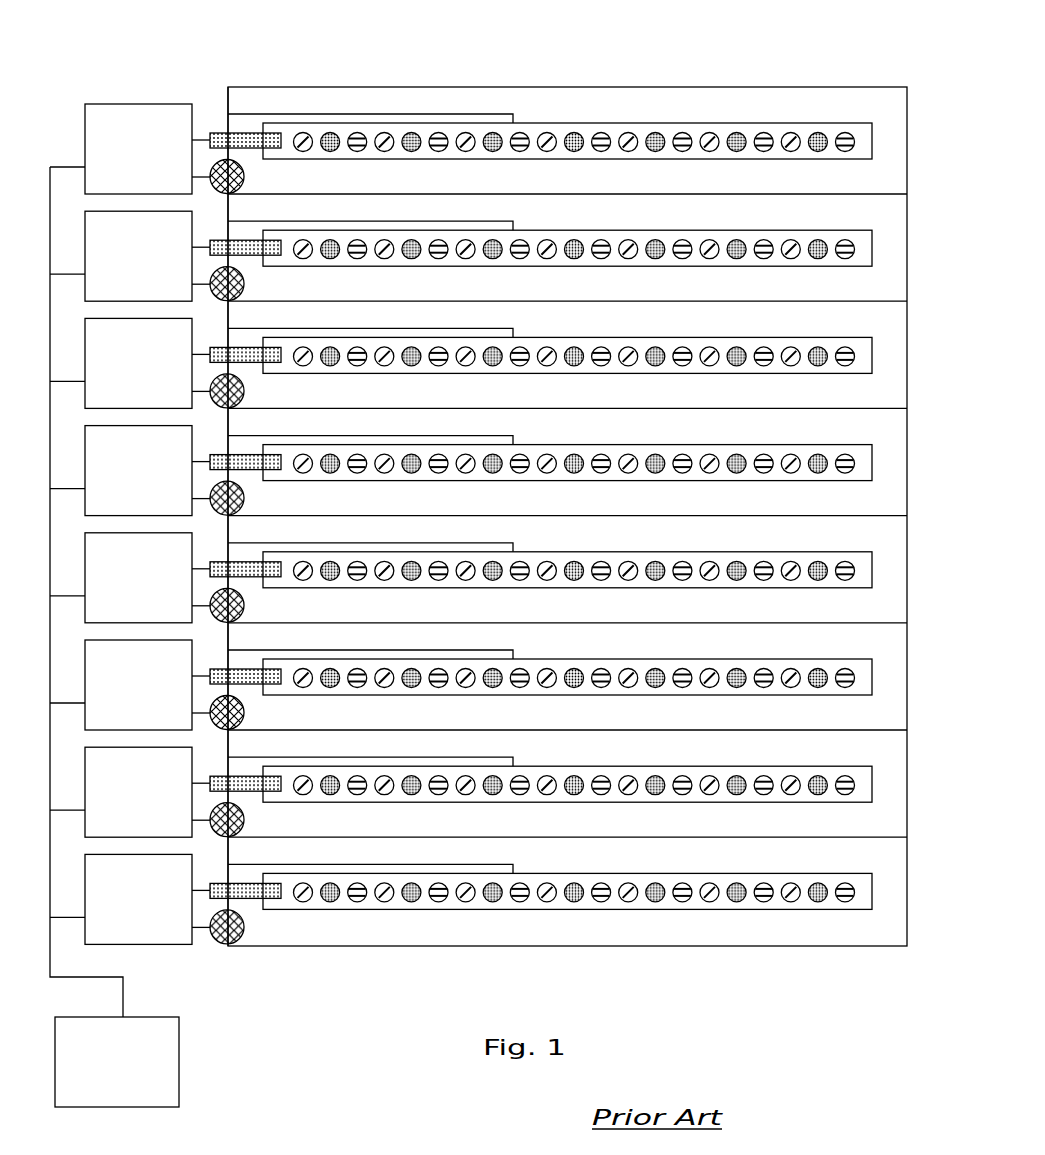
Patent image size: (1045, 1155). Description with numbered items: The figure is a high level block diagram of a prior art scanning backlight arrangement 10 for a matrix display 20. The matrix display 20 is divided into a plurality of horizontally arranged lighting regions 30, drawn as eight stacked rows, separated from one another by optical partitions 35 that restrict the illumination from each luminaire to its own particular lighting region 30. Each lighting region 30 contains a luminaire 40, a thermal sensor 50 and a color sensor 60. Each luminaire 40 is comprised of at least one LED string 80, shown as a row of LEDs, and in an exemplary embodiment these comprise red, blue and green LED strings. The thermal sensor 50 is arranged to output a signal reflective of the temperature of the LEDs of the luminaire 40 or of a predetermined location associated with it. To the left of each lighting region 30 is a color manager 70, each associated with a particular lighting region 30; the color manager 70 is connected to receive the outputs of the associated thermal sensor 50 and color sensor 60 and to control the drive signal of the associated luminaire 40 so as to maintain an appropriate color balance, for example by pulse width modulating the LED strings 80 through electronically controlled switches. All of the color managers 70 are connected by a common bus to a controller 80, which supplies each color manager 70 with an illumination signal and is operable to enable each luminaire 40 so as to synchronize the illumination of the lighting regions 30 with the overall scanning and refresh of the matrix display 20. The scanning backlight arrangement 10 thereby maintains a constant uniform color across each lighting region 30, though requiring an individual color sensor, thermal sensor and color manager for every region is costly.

The scanning backlight arrangement 10 is at (655, 63).
The matrix display 20 is at (371, 87).
The lighting region 30 is at (900, 133).
The optical partition 35 is at (720, 194).
The luminaire 40 is at (443, 159).
The thermal sensor 50 is at (248, 133).
The color sensor 60 is at (244, 171).
The color manager 70 is at (85, 122).
The controller 80 is at (145, 1017).